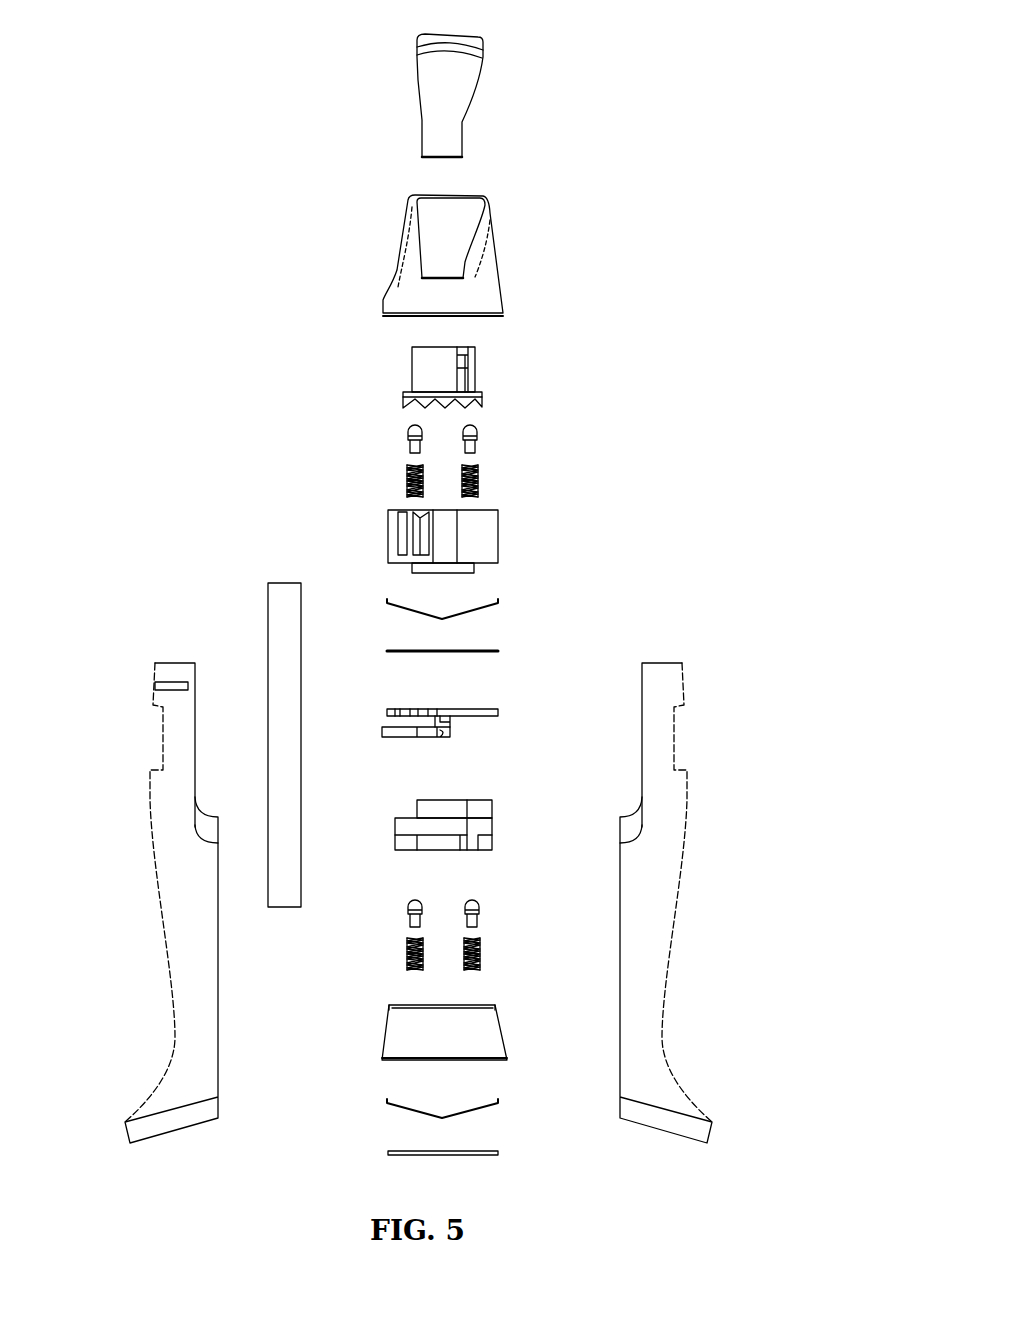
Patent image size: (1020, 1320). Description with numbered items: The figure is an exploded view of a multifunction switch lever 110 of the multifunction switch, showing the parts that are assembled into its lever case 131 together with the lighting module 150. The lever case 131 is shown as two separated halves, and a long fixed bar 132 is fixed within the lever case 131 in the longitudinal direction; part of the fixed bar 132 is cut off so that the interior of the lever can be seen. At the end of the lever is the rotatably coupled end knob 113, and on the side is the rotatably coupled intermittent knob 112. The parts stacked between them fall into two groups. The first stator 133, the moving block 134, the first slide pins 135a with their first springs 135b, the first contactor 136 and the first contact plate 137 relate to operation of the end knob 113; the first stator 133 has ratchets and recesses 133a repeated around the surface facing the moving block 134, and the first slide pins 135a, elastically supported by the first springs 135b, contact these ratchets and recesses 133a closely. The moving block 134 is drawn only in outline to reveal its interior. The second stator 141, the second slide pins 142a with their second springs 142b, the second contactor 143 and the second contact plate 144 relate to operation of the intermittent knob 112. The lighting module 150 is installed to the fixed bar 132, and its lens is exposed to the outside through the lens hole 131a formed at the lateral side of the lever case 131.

The multifunction switch lever 110 is at (612, 456).
The end knob 113 is at (490, 254).
The first stator 133 is at (476, 373).
The ratchets and recesses 133a is at (470, 407).
The first slide pins 135a is at (408, 436).
The first springs 135b is at (407, 478).
The moving block 134 is at (490, 540).
The fixed bar 132 is at (276, 598).
The first contactor 136 is at (498, 603).
The first contact plate 137 is at (498, 651).
The lighting module 150 is at (485, 725).
The second stator 141 is at (486, 823).
The second slide pins 142a is at (478, 910).
The second springs 142b is at (480, 952).
The intermittent knob 112 is at (393, 1038).
The second contactor 143 is at (386, 1103).
The second contact plate 144 is at (388, 1153).
The lever case 131 is at (160, 807).
The lens hole 131a is at (155, 685).